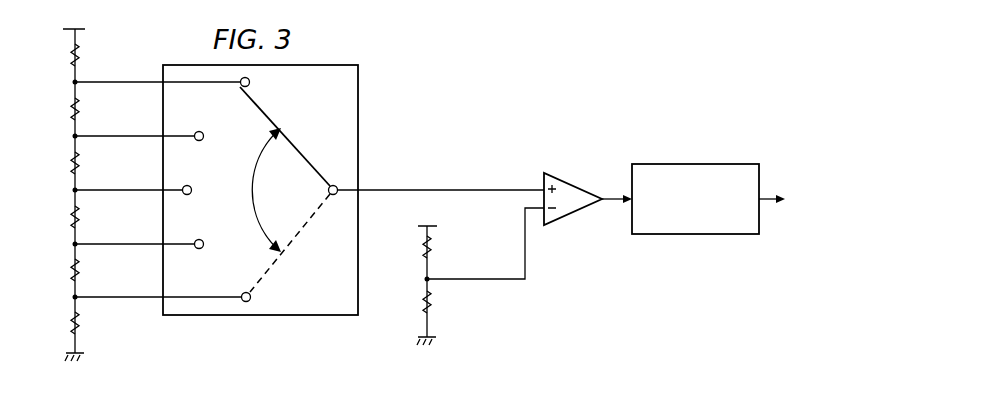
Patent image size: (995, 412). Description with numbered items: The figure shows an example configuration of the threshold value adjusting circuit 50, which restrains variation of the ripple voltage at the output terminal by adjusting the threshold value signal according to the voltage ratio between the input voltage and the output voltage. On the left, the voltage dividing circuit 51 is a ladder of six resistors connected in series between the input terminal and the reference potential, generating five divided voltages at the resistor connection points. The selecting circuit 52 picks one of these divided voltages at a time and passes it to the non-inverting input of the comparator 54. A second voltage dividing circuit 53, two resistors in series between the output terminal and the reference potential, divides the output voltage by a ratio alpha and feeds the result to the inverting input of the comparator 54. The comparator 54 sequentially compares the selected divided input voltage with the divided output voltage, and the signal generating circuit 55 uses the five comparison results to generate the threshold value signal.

The threshold value adjusting circuit 50 is at (572, 80).
The voltage dividing circuit 51 is at (99, 332).
The selecting circuit 52 is at (258, 316).
The voltage dividing circuit 53 is at (451, 315).
The comparator 54 is at (573, 216).
The signal generating circuit 55 is at (694, 162).